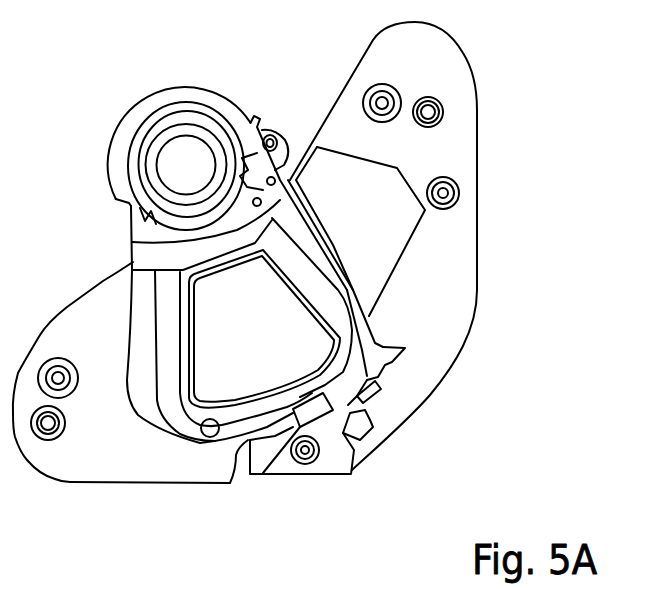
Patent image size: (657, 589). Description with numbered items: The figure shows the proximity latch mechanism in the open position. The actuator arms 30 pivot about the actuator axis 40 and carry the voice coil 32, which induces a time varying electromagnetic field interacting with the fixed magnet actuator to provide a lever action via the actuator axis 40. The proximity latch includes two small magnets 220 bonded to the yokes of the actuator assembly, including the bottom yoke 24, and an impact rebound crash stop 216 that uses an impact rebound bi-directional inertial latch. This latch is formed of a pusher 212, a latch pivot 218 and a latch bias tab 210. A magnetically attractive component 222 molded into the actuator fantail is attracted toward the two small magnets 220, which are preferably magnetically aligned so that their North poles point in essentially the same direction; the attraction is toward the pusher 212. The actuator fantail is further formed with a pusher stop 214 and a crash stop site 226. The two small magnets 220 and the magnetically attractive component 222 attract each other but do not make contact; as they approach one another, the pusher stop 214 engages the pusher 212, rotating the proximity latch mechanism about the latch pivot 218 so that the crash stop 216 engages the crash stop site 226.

The bottom yoke 24 is at (473, 74).
The actuator arms 30 is at (132, 259).
The actuator axis 40 is at (193, 133).
The voice coil 32 is at (253, 420).
The latch bias tab 210 is at (282, 490).
The pusher 212 is at (265, 475).
The pusher stop 214 is at (334, 372).
The impact rebound crash stop 216 is at (377, 393).
The latch pivot 218 is at (305, 464).
The small magnets 220 is at (354, 430).
The magnetically attractive component 222 is at (372, 397).
The crash stop site 226 is at (400, 370).